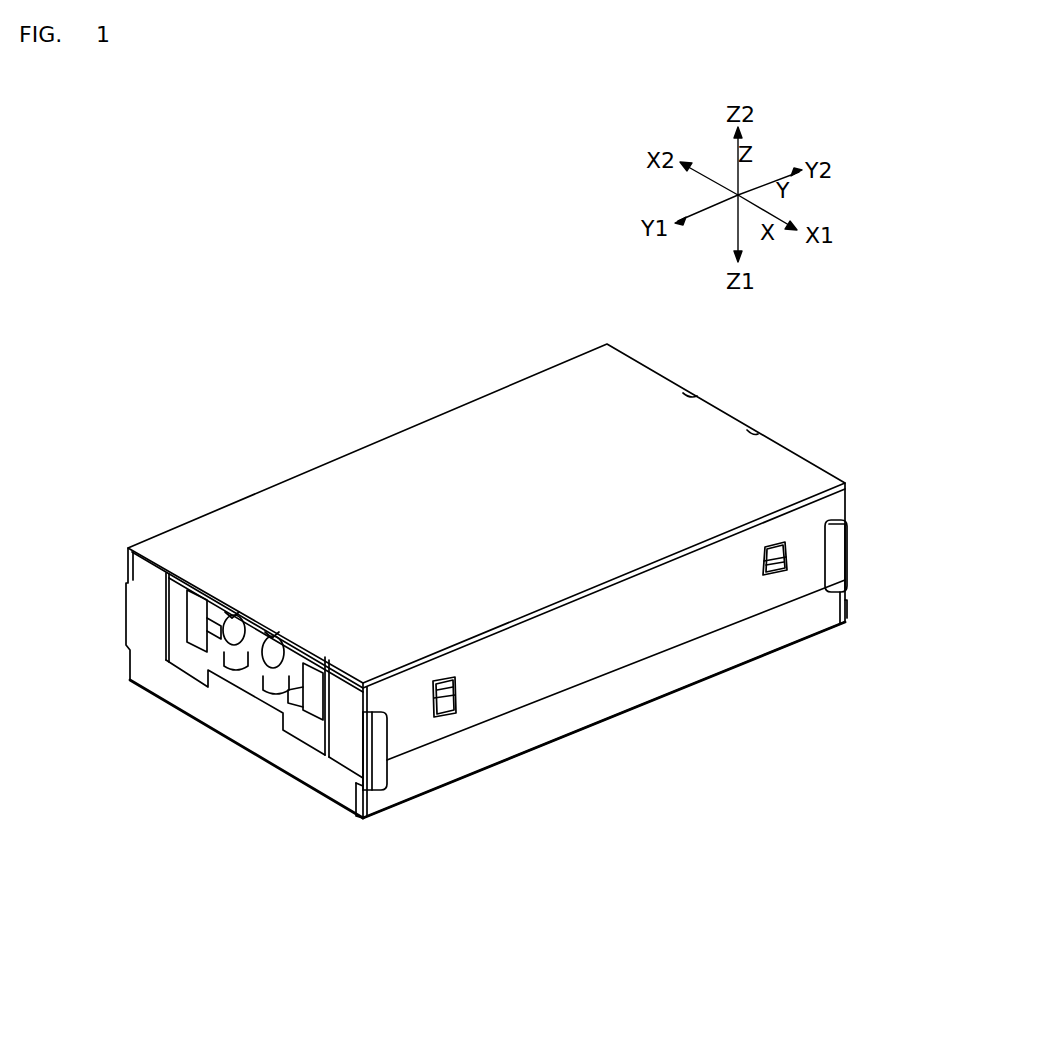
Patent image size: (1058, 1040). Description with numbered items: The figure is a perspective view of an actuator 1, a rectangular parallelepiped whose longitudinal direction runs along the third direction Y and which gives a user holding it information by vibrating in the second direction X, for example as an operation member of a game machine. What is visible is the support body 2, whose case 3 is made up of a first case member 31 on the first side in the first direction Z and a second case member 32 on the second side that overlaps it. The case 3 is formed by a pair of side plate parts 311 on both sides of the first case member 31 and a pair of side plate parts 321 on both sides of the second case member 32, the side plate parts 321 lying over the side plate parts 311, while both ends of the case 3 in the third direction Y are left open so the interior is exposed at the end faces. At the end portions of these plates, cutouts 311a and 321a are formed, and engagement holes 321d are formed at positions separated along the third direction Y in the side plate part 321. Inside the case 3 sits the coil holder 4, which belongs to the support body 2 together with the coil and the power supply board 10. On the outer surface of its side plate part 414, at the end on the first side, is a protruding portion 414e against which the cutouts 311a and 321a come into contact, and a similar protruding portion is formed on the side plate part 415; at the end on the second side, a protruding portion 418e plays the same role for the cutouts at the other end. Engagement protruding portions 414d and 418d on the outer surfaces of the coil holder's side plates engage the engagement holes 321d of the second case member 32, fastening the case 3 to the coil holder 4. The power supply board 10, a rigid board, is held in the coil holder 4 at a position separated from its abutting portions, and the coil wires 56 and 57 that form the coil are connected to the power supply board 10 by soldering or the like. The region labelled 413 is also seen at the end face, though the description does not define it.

The actuator 1 is at (302, 392).
The support body 2 is at (150, 673).
The case 3 is at (807, 361).
The coil holder 4 is at (212, 715).
The power supply board 10 is at (192, 655).
The first case member 31 is at (704, 645).
The second case member 32 is at (713, 450).
The coil wire 56 is at (297, 670).
The coil wire 57 is at (248, 655).
The side plate part 311 is at (678, 672).
The cutout 311a is at (380, 787).
The side plate part 321 is at (567, 667).
The cutout 321a is at (388, 757).
The engagement hole 321d is at (455, 708).
The end wall connector panel 413 is at (243, 736).
The side plate part 414 is at (345, 731).
The engagement protruding portion 414d is at (443, 678).
The protruding portion 414e is at (372, 753).
The side plate part 415 is at (142, 605).
The engagement protruding portion 418d is at (777, 576).
The protruding portion 418e is at (843, 571).